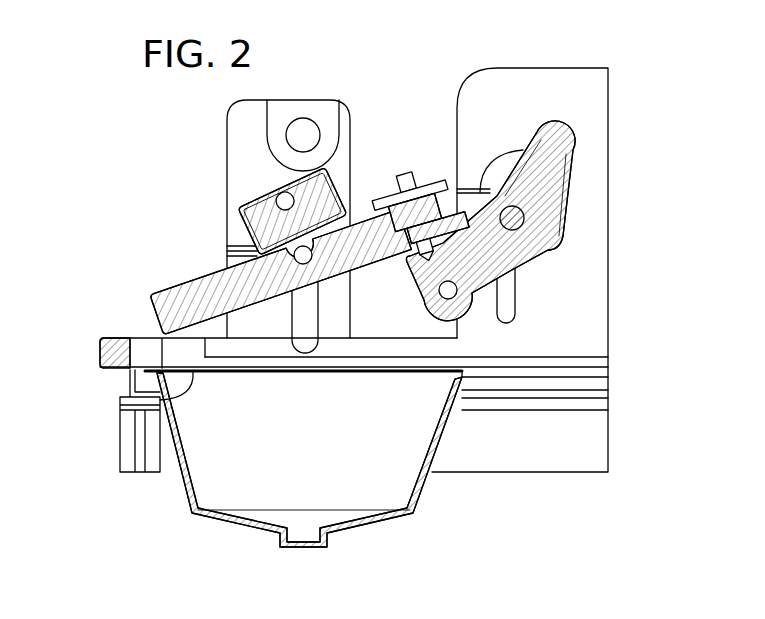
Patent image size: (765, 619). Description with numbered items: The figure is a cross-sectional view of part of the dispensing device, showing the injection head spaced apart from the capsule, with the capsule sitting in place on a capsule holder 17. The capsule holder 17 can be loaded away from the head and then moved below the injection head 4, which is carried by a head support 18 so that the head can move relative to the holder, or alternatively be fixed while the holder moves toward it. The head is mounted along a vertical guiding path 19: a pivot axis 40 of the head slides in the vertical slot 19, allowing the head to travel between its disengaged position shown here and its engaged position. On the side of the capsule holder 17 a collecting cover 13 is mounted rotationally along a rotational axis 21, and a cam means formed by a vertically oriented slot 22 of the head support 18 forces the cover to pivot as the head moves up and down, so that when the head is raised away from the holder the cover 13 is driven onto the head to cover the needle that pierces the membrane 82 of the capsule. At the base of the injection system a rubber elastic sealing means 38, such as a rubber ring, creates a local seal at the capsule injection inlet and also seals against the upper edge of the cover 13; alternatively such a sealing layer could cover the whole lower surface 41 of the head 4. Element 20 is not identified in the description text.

The injection head 4 is at (172, 300).
The collecting cover 13 is at (503, 248).
The capsule holder 17 is at (557, 455).
The head support 18 is at (267, 132).
The vertical guiding path (vertical slot) 19 is at (303, 318).
The tray 20 is at (182, 483).
The rotational axis 21 is at (517, 218).
The vertically oriented slot 22 is at (517, 305).
The rubber elastic sealing means 38 is at (419, 195).
The pivot axis 40 is at (307, 247).
The lower surface of the head 41 is at (247, 297).
The membrane 82 is at (122, 404).